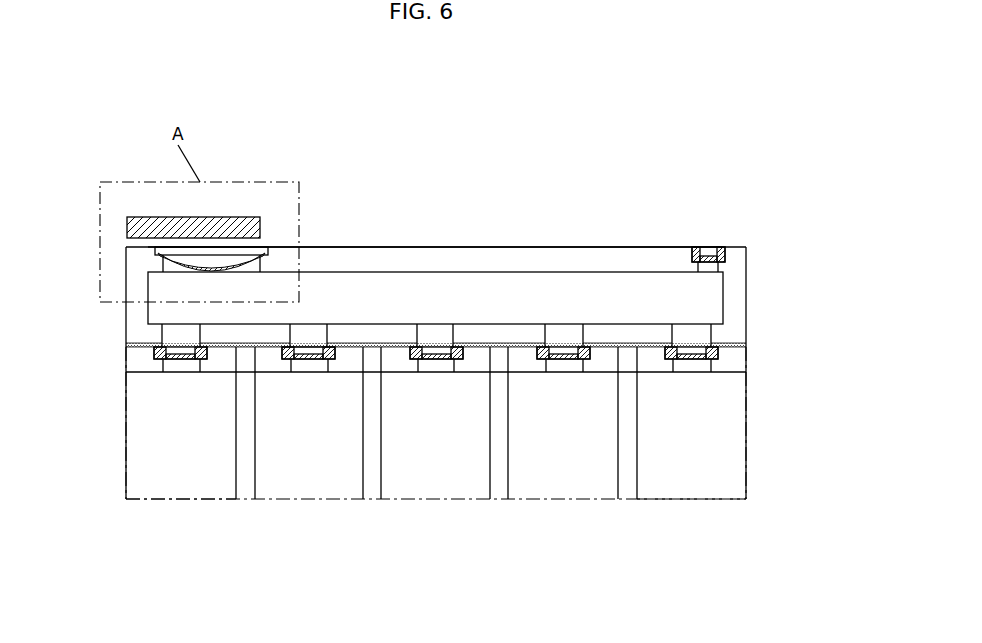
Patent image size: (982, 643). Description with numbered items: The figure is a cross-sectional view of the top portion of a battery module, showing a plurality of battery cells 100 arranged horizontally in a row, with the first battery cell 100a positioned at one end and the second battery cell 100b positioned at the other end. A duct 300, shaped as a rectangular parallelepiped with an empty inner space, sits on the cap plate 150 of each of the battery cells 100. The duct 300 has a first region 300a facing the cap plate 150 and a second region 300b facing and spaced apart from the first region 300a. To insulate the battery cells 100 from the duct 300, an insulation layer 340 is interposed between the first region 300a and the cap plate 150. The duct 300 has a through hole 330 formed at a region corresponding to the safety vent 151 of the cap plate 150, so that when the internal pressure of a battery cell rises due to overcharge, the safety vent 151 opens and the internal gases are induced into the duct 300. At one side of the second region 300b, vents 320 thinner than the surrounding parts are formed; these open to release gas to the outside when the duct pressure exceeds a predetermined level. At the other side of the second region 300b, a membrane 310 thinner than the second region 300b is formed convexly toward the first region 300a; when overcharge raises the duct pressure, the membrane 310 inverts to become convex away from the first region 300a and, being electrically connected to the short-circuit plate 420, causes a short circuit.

The battery cells 100 is at (708, 577).
The first battery cell 100a is at (693, 488).
The second battery cell 100b is at (184, 490).
The cap plate 150 is at (136, 362).
The safety vent 151 is at (183, 363).
The duct 300 is at (490, 247).
The first region 300a is at (652, 331).
The second region 300b is at (607, 253).
The membrane 310 is at (263, 264).
The vents 320 is at (693, 247).
The through hole 330 is at (690, 360).
The insulation layer 340 is at (737, 344).
The short-circuit plate 420 is at (130, 227).